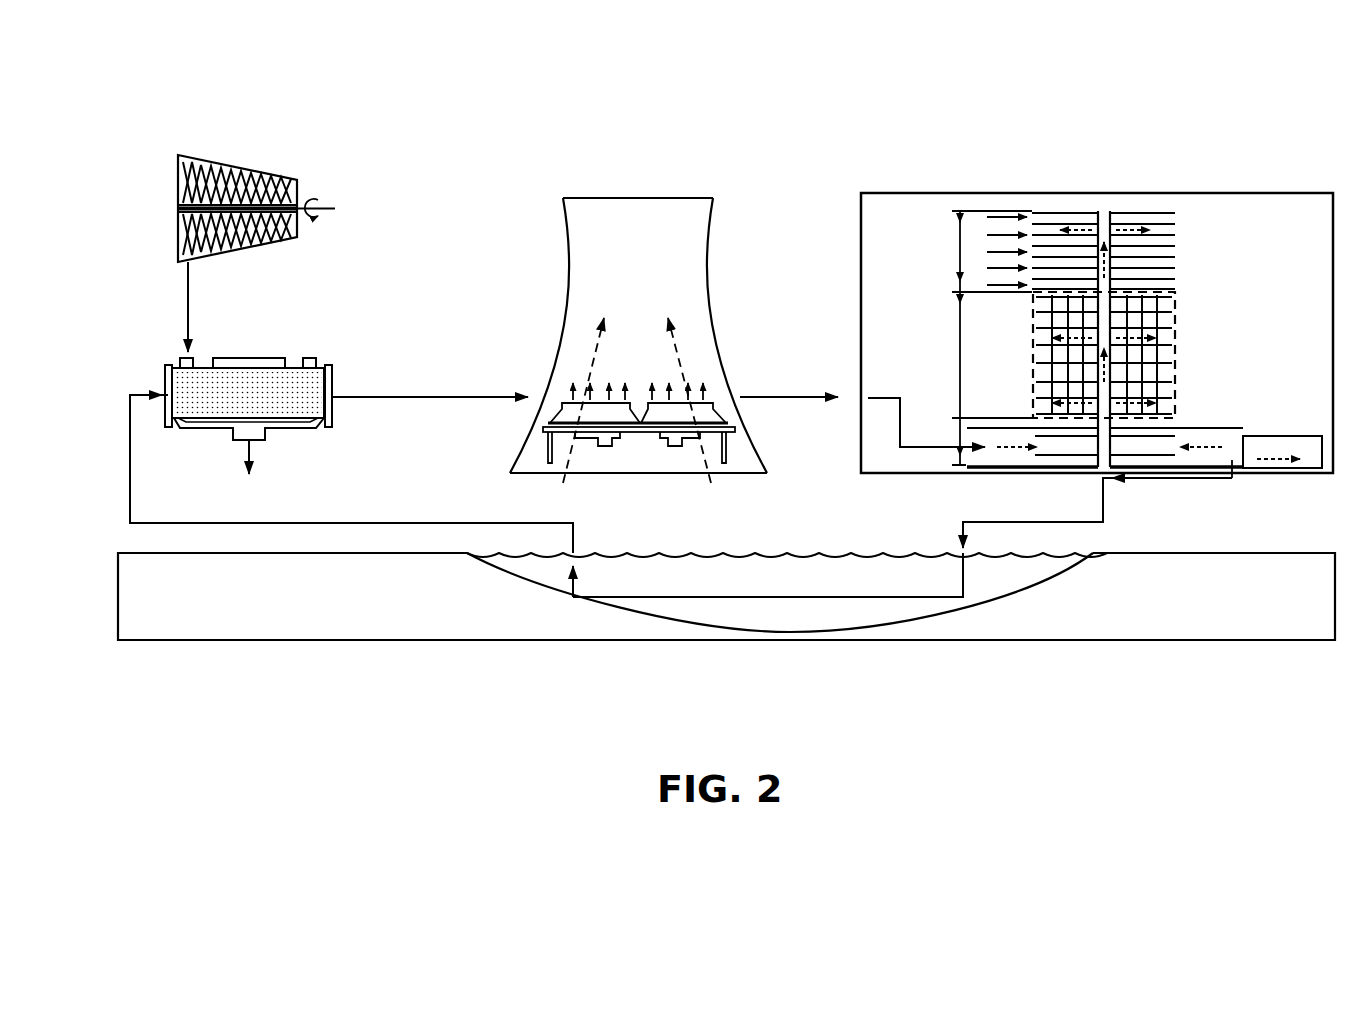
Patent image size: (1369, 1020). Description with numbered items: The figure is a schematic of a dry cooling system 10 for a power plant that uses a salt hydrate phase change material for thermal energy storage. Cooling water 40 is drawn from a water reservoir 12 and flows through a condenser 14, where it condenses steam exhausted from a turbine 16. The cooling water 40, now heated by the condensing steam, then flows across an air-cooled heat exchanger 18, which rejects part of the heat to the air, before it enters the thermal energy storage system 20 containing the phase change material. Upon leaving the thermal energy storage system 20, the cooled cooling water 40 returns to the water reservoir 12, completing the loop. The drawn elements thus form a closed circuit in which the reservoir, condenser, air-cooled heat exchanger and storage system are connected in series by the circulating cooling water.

The dry cooling system 10 is at (1206, 105).
The water reservoir 12 is at (1023, 592).
The condenser 14 is at (262, 357).
The turbine 16 is at (268, 173).
The air-cooled heat exchanger 18 is at (634, 200).
The thermal energy storage system 20 is at (947, 193).
The cooling water 40 is at (836, 590).